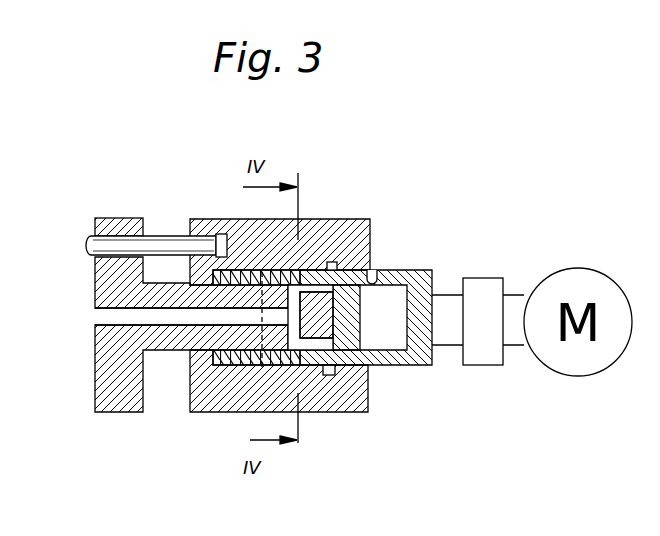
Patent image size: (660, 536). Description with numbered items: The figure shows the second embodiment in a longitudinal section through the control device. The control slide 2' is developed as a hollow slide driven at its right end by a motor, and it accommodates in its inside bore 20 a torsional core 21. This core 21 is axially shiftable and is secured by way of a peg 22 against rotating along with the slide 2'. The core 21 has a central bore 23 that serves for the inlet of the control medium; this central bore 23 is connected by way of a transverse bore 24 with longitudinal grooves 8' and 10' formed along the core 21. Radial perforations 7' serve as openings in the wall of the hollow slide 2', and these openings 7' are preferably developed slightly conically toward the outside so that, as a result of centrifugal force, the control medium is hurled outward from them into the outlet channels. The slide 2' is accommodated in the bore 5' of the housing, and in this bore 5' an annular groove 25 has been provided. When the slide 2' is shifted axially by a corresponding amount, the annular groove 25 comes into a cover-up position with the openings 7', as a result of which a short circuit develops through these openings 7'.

The control slide 2' is at (369, 295).
The bore of the housing 5' is at (385, 255).
The radial perforations 7' is at (280, 240).
The longitudinal groove 8' is at (256, 391).
The longitudinal groove 10' is at (307, 279).
The inside bore 20 is at (385, 341).
The torsional core 21 is at (170, 340).
The peg 22 is at (167, 240).
The central bore 23 is at (102, 314).
The transverse bore 24 is at (297, 313).
The annular groove 25 is at (338, 268).